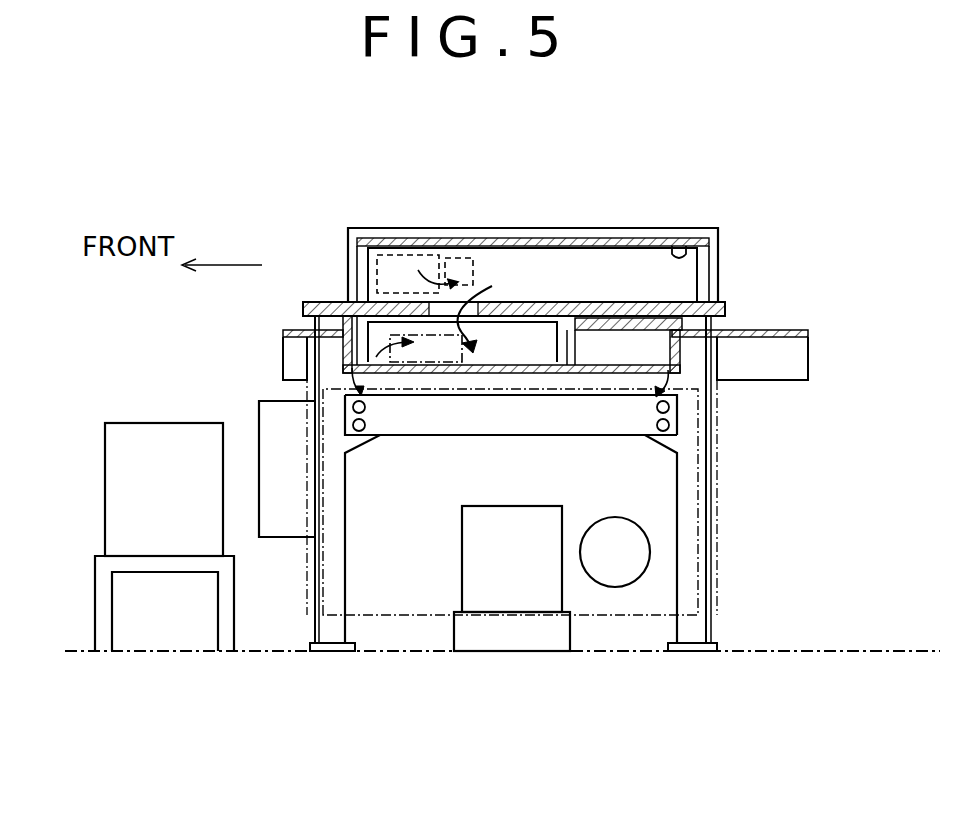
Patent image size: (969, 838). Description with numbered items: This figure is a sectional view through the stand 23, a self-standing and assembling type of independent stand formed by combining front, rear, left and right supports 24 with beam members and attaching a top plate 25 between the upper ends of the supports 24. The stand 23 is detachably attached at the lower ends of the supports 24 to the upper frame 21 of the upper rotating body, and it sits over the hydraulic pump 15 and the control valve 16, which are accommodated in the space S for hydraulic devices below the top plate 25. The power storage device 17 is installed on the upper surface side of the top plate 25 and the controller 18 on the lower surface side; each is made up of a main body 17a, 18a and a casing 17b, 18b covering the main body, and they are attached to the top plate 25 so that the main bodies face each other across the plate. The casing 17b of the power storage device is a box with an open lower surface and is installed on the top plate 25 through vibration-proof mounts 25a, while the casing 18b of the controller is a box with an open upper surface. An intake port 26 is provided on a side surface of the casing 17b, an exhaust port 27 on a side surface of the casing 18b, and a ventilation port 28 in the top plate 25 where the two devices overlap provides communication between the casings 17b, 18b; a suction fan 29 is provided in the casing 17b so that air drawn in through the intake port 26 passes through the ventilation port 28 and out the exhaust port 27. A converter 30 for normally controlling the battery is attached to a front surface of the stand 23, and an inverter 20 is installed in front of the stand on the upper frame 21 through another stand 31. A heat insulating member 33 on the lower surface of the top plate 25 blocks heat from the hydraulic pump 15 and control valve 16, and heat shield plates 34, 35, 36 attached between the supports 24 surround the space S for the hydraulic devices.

The hydraulic pump 15 is at (615, 588).
The control valve 16 is at (462, 557).
The power storage device 17 is at (603, 270).
The main body of power storage device 17a is at (700, 260).
The casing of power storage device 17b is at (719, 292).
The controller 18 is at (532, 233).
The main body of controller 18a is at (520, 330).
The casing of controller 18b is at (578, 330).
The inverter 20 is at (137, 423).
The upper frame 21 is at (808, 650).
The stand 23 is at (722, 512).
The support 24 is at (312, 627).
The top plate 25 is at (650, 303).
The vibration-proof mount 25a is at (308, 322).
The intake port 26 is at (406, 228).
The exhaust port 27 is at (432, 352).
The ventilation port 28 is at (473, 300).
The suction fan 29 is at (460, 228).
The converter 30 is at (683, 247).
The another stand 31 is at (105, 627).
The heat insulating member 33 is at (615, 333).
The heat shield plate 34 is at (307, 580).
The heat shield plate 35 is at (720, 580).
The heat shield plate 36 is at (407, 615).
The space for hydraulic devices S is at (647, 473).